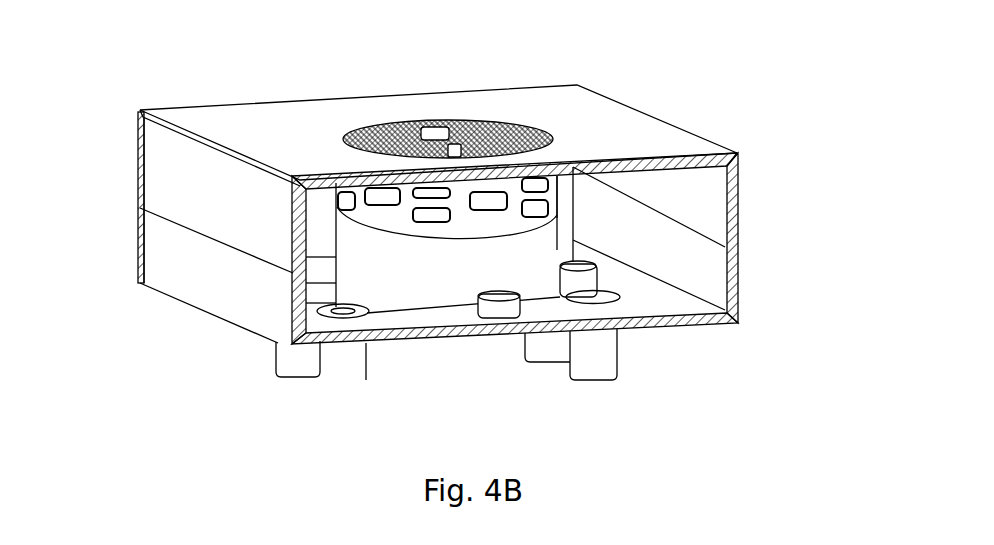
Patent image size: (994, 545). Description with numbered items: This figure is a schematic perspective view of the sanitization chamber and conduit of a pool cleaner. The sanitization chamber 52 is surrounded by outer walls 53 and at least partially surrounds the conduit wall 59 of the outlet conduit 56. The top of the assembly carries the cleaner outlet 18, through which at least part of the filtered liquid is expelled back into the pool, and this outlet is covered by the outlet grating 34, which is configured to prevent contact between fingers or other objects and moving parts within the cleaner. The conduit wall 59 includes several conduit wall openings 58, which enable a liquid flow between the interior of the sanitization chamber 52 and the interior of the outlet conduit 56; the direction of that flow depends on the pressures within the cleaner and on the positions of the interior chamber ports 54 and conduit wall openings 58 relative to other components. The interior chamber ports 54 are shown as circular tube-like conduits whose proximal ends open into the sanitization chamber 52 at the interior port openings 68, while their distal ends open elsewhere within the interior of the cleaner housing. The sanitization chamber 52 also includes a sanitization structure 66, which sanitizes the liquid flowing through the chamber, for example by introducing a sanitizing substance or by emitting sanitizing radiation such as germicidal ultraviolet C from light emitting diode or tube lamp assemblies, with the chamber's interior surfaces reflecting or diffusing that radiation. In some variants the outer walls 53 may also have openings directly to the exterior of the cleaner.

The cleaner outlet 18 is at (458, 155).
The outlet grating 34 is at (440, 99).
The sanitization chamber 52 is at (455, 233).
The outer walls 53 is at (200, 123).
The interior chamber ports 54 is at (568, 360).
The outlet conduit 56 is at (320, 211).
The conduit wall openings 58 is at (537, 183).
The conduit wall 59 is at (463, 287).
The sanitization structure 66 is at (707, 278).
The interior port openings 68 is at (342, 307).